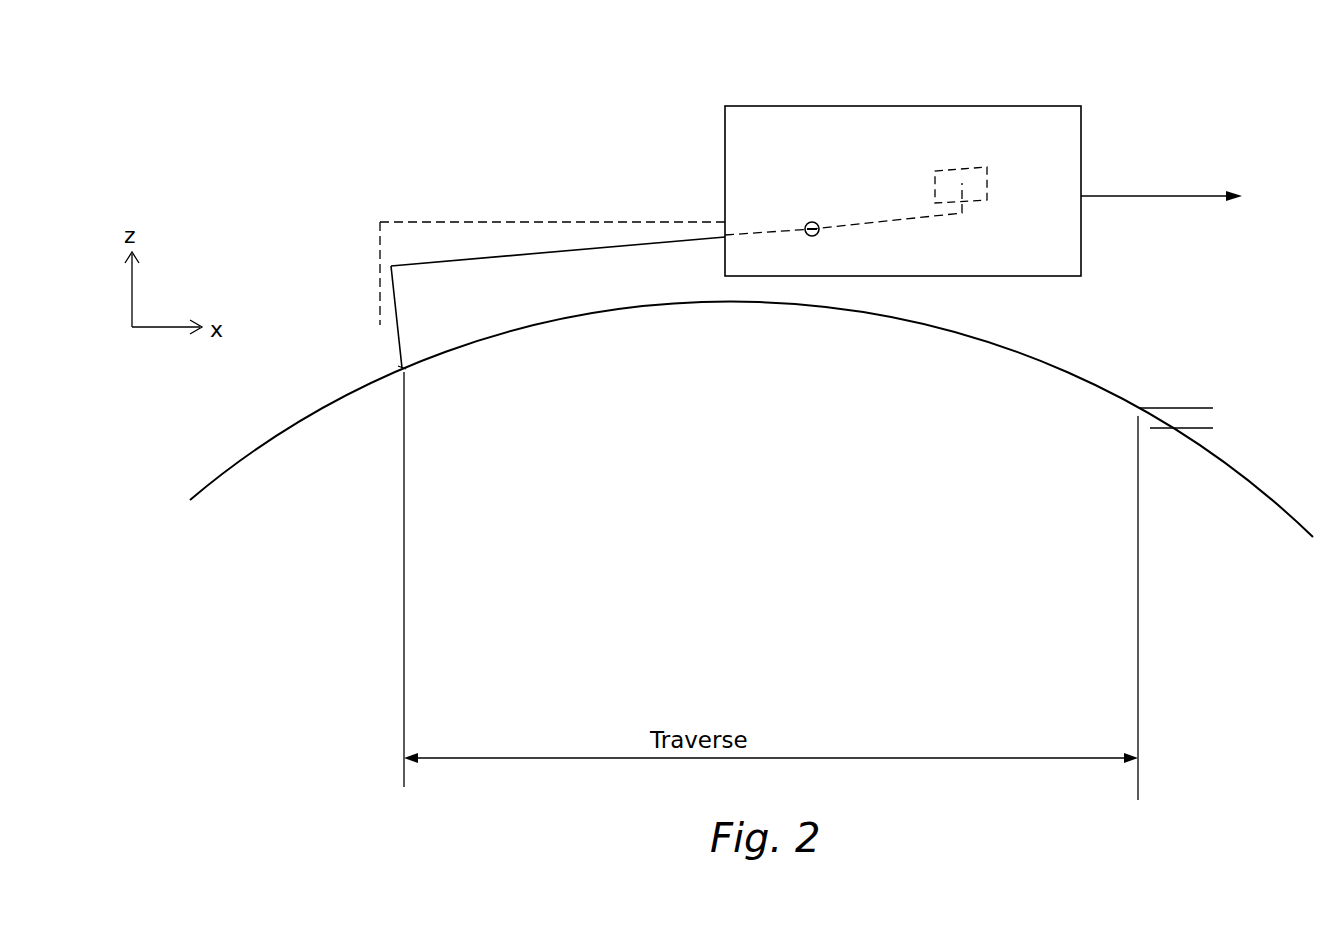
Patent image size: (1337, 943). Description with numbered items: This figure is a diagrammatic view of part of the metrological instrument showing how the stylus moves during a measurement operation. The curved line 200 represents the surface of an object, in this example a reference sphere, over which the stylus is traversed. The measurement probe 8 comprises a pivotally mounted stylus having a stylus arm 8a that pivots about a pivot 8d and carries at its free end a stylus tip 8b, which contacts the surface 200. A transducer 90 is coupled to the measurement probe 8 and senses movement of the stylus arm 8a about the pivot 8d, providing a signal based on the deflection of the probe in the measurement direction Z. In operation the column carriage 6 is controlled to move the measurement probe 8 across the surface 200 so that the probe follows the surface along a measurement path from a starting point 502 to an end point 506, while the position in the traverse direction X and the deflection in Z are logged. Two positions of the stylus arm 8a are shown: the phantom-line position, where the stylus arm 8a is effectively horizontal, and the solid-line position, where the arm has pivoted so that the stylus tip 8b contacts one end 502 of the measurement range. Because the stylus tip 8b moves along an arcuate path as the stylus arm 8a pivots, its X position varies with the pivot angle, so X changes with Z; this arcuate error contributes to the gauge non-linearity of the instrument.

The column carriage 6 is at (917, 106).
The measurement probe 8 is at (632, 254).
The stylus arm 8a is at (566, 250).
The stylus tip 8b is at (395, 310).
The pivot 8d is at (812, 222).
The transducer 90 is at (987, 172).
The surface 200 is at (278, 430).
The starting point 502 is at (402, 363).
The end point 506 is at (1142, 400).